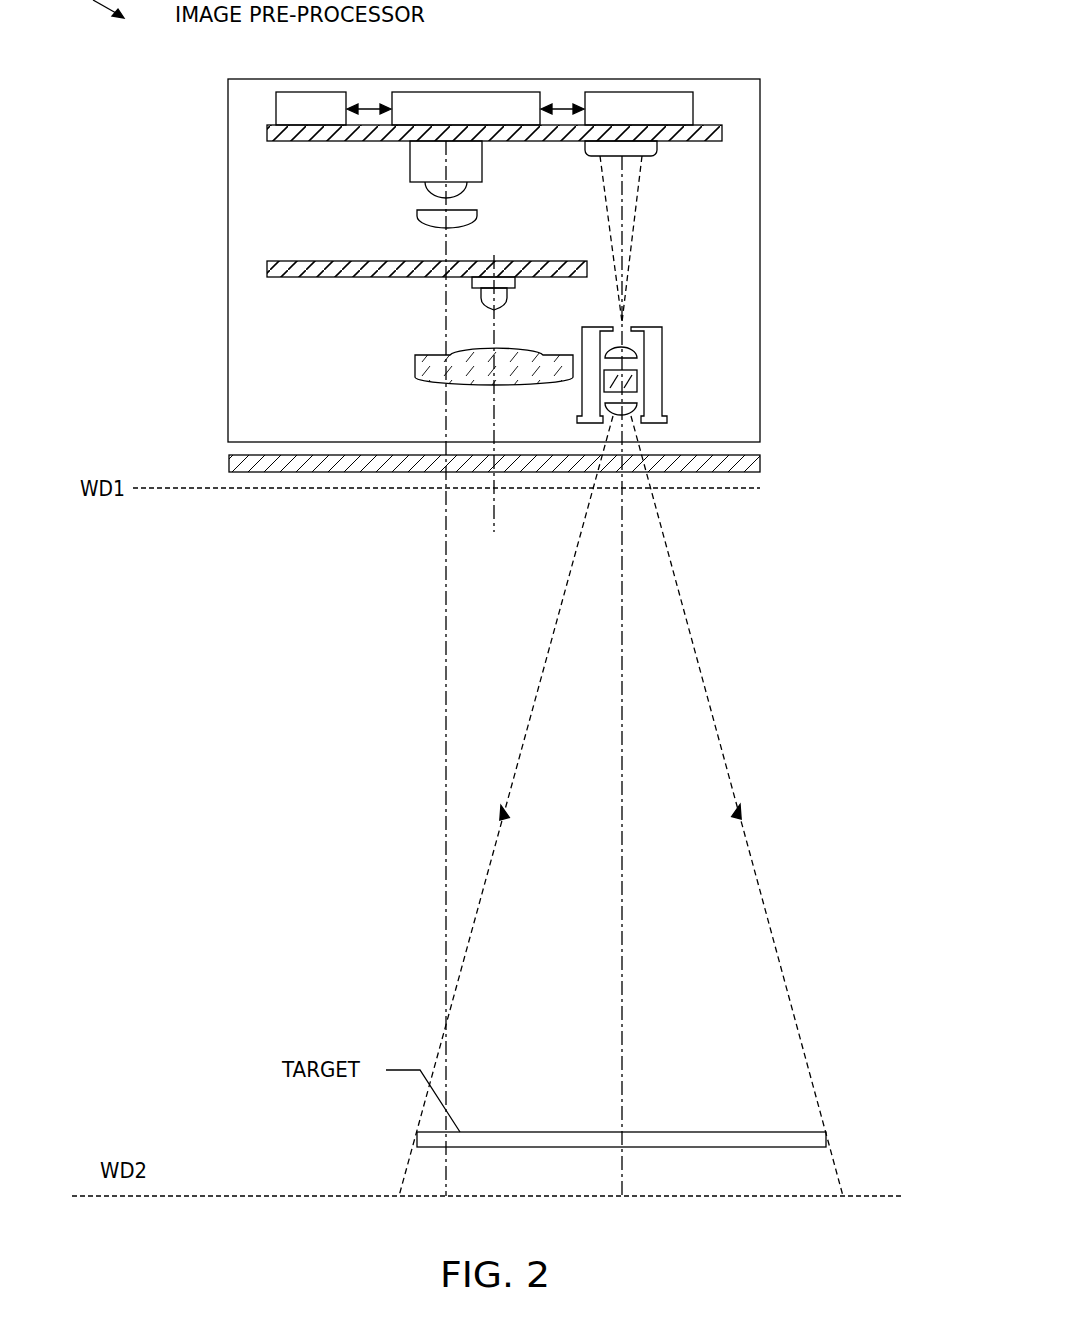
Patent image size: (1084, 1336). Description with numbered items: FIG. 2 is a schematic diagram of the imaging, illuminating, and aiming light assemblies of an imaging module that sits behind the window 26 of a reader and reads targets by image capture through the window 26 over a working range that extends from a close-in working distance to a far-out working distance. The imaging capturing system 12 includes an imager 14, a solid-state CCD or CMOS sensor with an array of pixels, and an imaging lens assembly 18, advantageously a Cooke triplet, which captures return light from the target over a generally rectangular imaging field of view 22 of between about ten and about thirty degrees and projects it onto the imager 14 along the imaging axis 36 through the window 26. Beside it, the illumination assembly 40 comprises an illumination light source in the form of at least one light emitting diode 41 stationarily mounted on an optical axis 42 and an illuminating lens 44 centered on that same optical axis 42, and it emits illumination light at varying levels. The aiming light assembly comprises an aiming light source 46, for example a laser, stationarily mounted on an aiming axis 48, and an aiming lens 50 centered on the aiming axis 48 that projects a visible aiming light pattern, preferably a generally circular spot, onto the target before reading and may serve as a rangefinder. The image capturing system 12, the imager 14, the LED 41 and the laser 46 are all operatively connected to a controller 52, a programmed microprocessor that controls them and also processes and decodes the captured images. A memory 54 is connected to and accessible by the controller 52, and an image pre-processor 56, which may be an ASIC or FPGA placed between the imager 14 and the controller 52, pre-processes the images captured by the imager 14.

The imaging capturing system 12 is at (740, 116).
The imager 14 is at (660, 146).
The imaging lens assembly 18 is at (637, 342).
The imaging field of view 22 is at (695, 660).
The window 26 is at (229, 464).
The imaging axis 36 is at (622, 563).
The illumination assembly 40 is at (470, 283).
The light emitting diode 41 is at (508, 300).
The optical axis 42 is at (497, 507).
The illuminating lens 44 is at (547, 352).
The aiming light source 46 is at (408, 153).
The aiming axis 48 is at (446, 831).
The aiming lens 50 is at (417, 215).
The controller 52 is at (468, 92).
The memory 54 is at (643, 92).
The image pre-processor 56 is at (313, 92).